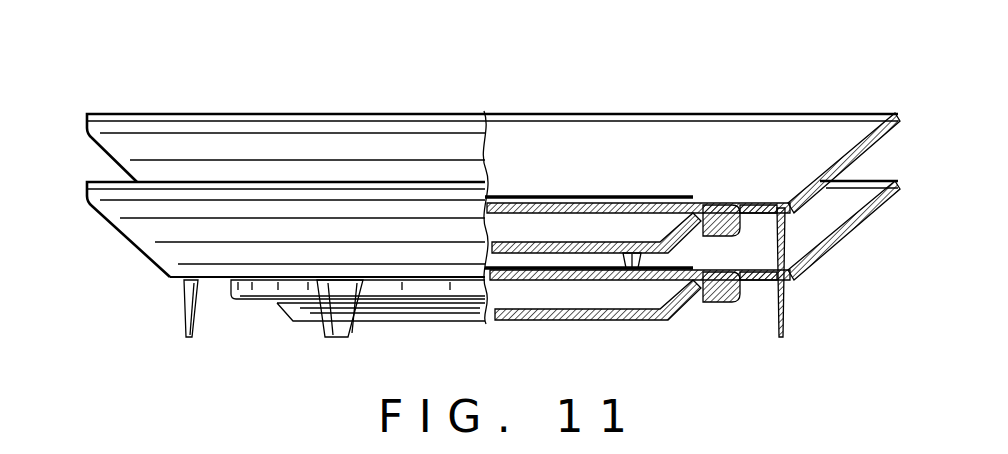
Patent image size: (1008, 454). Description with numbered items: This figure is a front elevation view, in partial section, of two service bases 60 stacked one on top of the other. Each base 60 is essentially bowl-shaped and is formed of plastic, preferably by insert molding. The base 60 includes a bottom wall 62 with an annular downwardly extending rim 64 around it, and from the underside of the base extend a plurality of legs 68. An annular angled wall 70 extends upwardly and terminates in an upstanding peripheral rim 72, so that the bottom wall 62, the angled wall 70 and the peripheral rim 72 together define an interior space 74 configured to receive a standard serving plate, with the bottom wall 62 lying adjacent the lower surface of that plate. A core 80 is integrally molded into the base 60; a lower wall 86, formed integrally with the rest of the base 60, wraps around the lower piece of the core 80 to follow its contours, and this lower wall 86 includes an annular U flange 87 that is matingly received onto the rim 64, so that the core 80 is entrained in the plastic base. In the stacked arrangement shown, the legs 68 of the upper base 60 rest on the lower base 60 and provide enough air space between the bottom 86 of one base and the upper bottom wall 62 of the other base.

The service base 60 is at (76, 82).
The bottom wall 62 is at (676, 262).
The annular downwardly extending rim 64 is at (267, 283).
The legs 68 is at (337, 321).
The annular angled wall 70 is at (862, 145).
The upstanding peripheral rim 72 is at (100, 190).
The interior space 74 is at (578, 158).
The core 80 is at (650, 236).
The lower wall 86 is at (437, 310).
The annular U flange 87 is at (752, 218).